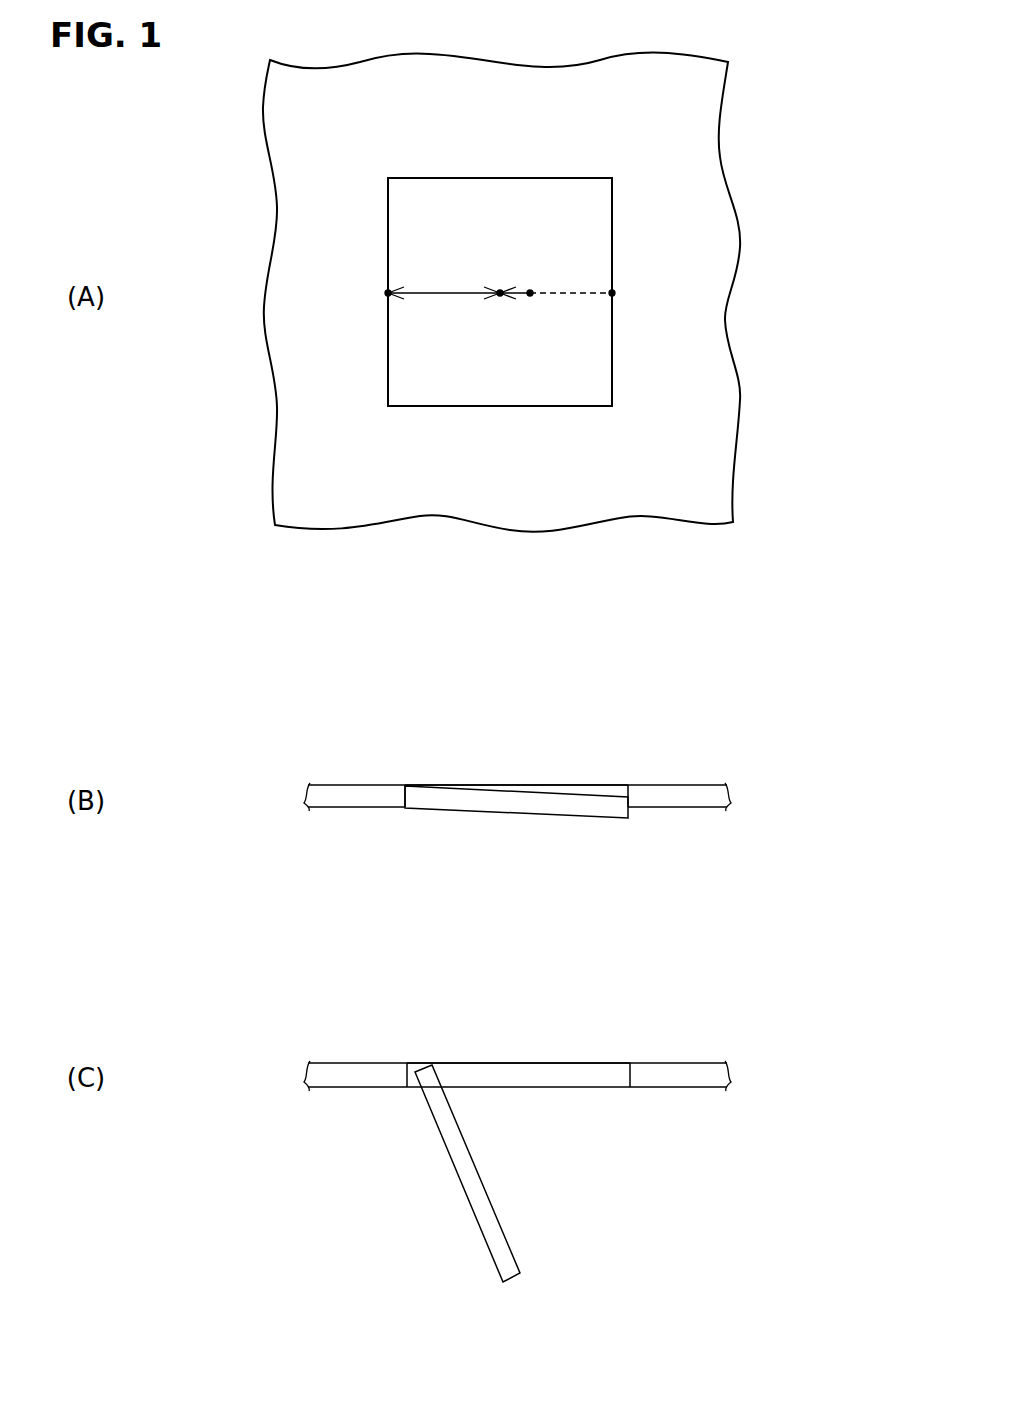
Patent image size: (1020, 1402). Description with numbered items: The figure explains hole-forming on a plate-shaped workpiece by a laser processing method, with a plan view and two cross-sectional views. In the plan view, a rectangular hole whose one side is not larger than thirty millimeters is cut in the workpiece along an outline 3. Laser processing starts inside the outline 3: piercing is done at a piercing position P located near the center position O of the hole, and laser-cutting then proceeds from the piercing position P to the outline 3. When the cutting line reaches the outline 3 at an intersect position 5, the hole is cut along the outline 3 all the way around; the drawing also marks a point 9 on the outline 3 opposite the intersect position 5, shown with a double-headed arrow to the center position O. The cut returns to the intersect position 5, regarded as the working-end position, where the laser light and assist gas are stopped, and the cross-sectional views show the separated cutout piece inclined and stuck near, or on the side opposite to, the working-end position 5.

The outline 3 is at (428, 177).
The intersect position 5 is at (615, 293).
The cutting start point 9 is at (386, 293).
The piercing position P is at (530, 290).
The center position O is at (500, 297).